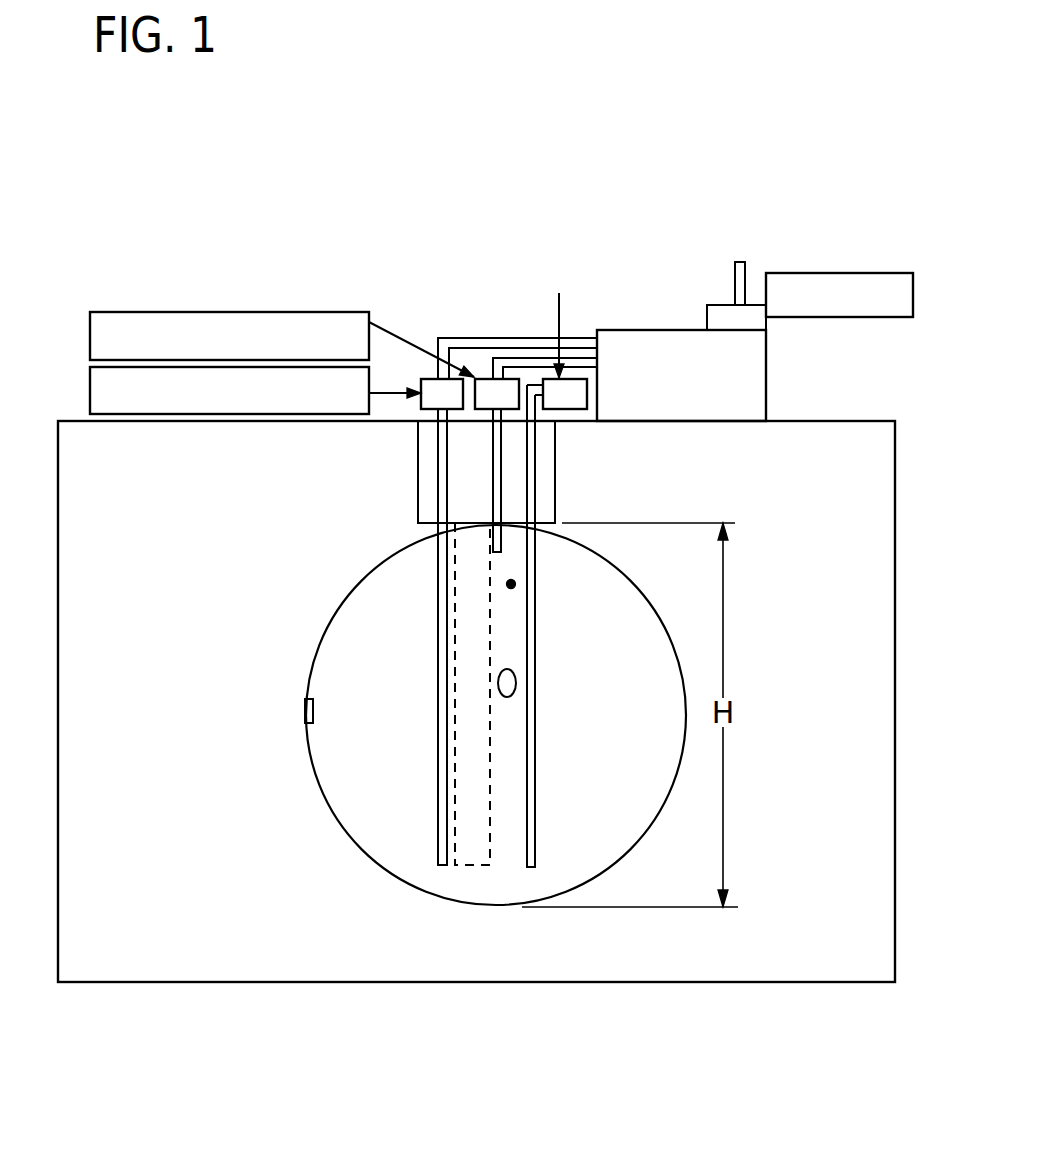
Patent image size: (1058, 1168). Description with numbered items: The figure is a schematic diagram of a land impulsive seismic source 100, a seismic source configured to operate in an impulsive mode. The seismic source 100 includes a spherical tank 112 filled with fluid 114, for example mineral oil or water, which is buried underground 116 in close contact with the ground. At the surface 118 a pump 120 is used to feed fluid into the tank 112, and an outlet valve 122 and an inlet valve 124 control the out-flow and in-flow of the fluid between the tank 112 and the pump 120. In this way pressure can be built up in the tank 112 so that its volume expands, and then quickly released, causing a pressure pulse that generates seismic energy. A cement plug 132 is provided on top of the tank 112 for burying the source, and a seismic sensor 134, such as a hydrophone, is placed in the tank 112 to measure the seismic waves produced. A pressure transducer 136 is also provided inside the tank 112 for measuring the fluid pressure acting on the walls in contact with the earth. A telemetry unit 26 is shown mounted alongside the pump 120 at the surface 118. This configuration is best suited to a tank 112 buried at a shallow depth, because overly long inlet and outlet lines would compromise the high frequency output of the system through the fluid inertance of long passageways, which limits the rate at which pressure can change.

The seismic source 100 is at (501, 214).
The telemetry unit 26 is at (832, 273).
The spherical tank 112 is at (322, 633).
The fluid 114 is at (511, 584).
The underground 116 is at (253, 848).
The surface 118 is at (870, 421).
The pump 120 is at (766, 381).
The valve 122 is at (218, 312).
The valve 124 is at (90, 393).
The cement plug 132 is at (485, 478).
The seismic sensor 134 is at (512, 667).
The pressure transducer 136 is at (305, 710).